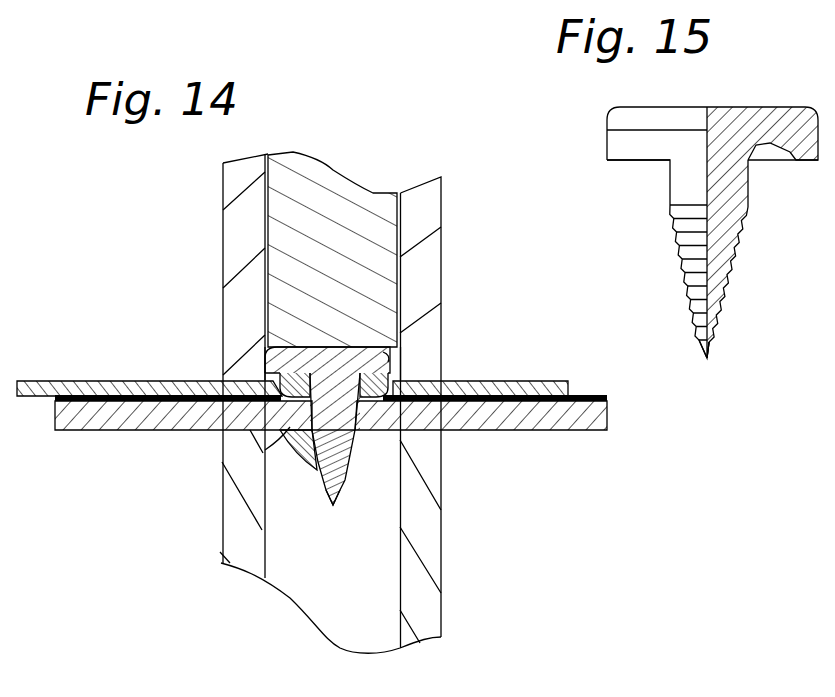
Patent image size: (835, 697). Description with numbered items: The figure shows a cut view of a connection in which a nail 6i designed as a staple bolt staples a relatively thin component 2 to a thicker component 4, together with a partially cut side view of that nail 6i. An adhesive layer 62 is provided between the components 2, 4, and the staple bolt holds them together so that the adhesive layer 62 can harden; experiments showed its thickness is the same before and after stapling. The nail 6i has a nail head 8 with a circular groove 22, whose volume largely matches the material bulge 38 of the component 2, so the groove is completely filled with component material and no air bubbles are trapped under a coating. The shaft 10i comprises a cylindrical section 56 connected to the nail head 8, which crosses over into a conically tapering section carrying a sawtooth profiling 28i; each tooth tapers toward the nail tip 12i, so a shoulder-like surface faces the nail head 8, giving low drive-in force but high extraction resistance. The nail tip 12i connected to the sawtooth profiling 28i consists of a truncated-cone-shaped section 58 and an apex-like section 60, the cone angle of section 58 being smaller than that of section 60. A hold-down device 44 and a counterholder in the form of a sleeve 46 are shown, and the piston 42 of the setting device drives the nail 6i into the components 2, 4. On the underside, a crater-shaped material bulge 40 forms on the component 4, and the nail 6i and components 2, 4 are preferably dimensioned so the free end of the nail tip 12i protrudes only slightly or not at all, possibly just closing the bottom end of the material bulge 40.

In FIG. 14, the component 2 is at (80, 381).
In FIG. 14, the component 4 is at (88, 430).
In FIG. 14, the nail 6i is at (384, 475).
In FIG. 15, the nail 6i is at (674, 259).
In FIG. 14, the nail head 8 is at (400, 357).
In FIG. 15, the nail head 8 is at (615, 138).
In FIG. 14, the shaft 10i is at (357, 430).
In FIG. 15, the shaft 10i is at (728, 221).
In FIG. 14, the nail tip 12i is at (343, 490).
In FIG. 15, the nail tip 12i is at (715, 337).
In FIG. 14, the circular groove 22 is at (420, 380).
In FIG. 15, the circular groove 22 is at (768, 150).
In FIG. 14, the sawtooth profiling 28i is at (358, 425).
In FIG. 15, the sawtooth profiling 28i is at (740, 263).
In FIG. 14, the material bulge 38 is at (265, 372).
In FIG. 14, the material bulge 40 is at (265, 450).
In FIG. 14, the piston 42 is at (334, 176).
In FIG. 14, the hold-down device 44 is at (233, 225).
In FIG. 14, the sleeve 46 is at (233, 532).
In FIG. 15, the cylindrical section 56 is at (670, 180).
In FIG. 15, the truncated-cone-shaped section 58 is at (688, 317).
In FIG. 15, the apex-like section 60 is at (700, 350).
In FIG. 14, the adhesive layer 62 is at (598, 396).